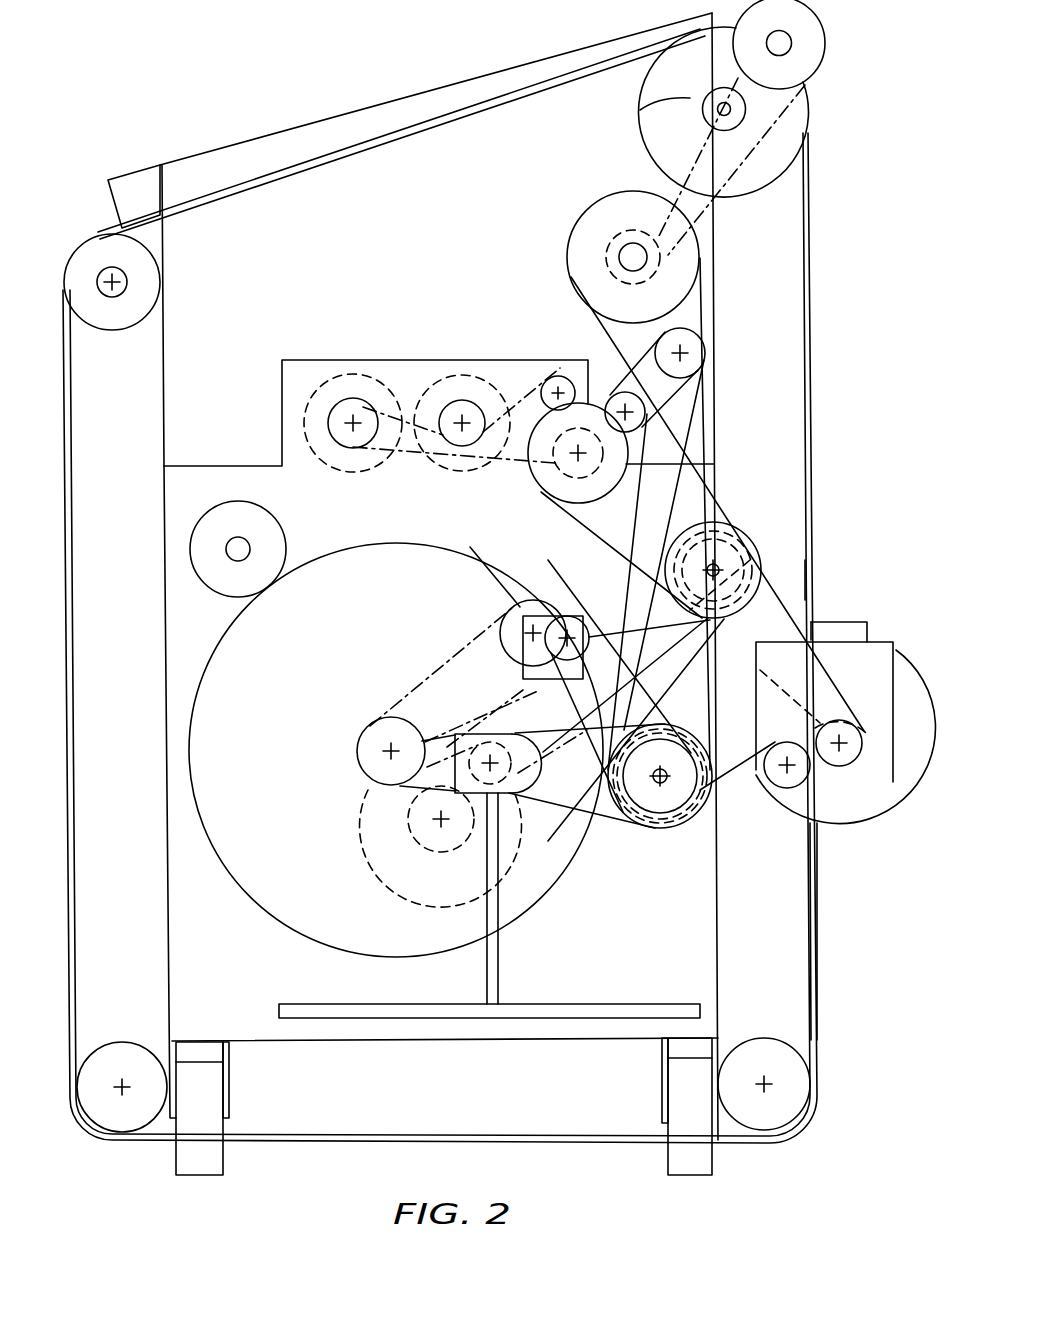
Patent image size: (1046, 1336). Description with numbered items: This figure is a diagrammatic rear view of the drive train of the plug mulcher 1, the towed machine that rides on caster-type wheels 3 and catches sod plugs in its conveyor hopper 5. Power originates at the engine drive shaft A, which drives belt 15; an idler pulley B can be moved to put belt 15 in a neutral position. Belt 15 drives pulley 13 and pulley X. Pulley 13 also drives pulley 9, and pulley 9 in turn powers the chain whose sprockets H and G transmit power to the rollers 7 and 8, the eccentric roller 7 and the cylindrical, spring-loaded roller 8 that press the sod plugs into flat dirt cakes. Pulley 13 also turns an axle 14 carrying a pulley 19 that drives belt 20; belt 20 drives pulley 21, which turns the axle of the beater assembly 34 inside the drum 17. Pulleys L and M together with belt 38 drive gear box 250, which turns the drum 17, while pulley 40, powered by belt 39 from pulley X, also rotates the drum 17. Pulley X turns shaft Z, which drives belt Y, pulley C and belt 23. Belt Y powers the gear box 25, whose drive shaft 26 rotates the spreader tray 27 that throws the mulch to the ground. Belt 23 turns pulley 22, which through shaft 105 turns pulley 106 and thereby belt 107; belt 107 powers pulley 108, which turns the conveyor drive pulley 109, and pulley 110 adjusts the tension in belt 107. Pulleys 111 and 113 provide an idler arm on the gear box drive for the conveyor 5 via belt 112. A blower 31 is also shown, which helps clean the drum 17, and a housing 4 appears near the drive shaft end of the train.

The plug mulcher 1 is at (170, 118).
The caster-type wheels 3 is at (205, 1100).
The drive housing 4 is at (858, 680).
The conveyor hopper 5 is at (812, 305).
The roller 7 is at (343, 375).
The roller 8 is at (463, 375).
The pulley 9 is at (545, 480).
The pulley 13 is at (738, 540).
The axle 14 is at (740, 597).
The belt 15 is at (806, 575).
The drum 17 is at (310, 624).
The pulley 19 is at (760, 540).
The belt 20 is at (615, 615).
The pulley 21 is at (428, 862).
The pulley 22 is at (580, 272).
The belt 23 is at (704, 305).
The gear box 25 is at (405, 800).
The drive shaft 26 is at (487, 975).
The spreader tray 27 is at (603, 1004).
The blower 31 is at (910, 670).
The beater assembly 34 is at (405, 835).
The belt 38 is at (448, 657).
The belt 39 is at (648, 690).
The pulley 40 is at (565, 610).
The shaft 105 is at (590, 243).
The pulley 106 is at (598, 215).
The belt 107 is at (806, 133).
The pulley 108 is at (640, 105).
The conveyor drive pulley 109 is at (662, 135).
The pulley 110 is at (816, 40).
The pulley 111 is at (700, 337).
The belt 112 is at (700, 385).
The pulley 113 is at (700, 395).
The gear box 250 is at (585, 698).
The engine drive shaft A is at (848, 752).
The idler pulley B is at (800, 780).
The pulley C is at (678, 792).
The pulley E is at (548, 372).
The sprocket G is at (455, 435).
The sprocket H is at (340, 435).
The pulley L is at (508, 618).
The pulley M is at (713, 522).
The pulley X is at (677, 817).
The belt Y is at (572, 812).
The shaft Z is at (660, 790).